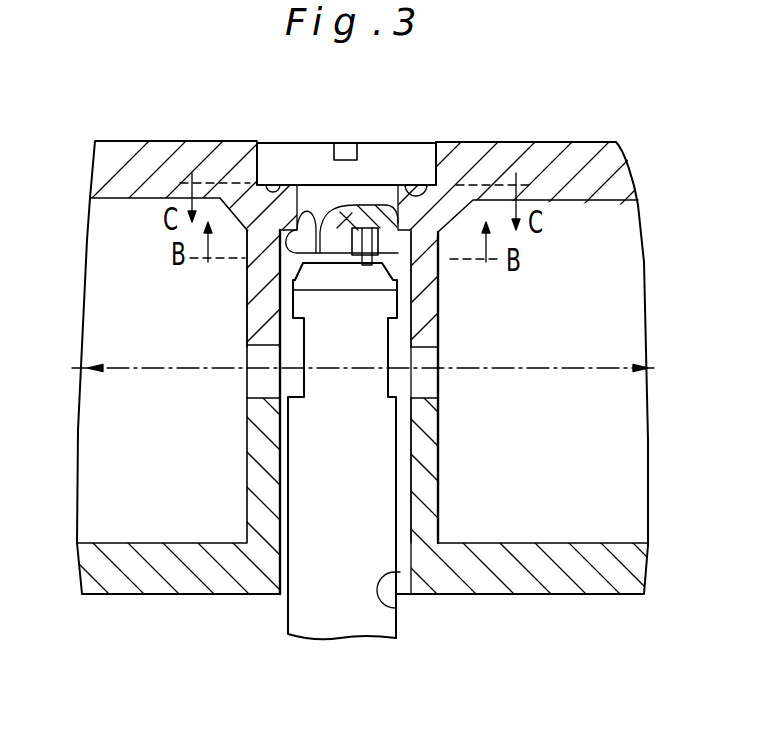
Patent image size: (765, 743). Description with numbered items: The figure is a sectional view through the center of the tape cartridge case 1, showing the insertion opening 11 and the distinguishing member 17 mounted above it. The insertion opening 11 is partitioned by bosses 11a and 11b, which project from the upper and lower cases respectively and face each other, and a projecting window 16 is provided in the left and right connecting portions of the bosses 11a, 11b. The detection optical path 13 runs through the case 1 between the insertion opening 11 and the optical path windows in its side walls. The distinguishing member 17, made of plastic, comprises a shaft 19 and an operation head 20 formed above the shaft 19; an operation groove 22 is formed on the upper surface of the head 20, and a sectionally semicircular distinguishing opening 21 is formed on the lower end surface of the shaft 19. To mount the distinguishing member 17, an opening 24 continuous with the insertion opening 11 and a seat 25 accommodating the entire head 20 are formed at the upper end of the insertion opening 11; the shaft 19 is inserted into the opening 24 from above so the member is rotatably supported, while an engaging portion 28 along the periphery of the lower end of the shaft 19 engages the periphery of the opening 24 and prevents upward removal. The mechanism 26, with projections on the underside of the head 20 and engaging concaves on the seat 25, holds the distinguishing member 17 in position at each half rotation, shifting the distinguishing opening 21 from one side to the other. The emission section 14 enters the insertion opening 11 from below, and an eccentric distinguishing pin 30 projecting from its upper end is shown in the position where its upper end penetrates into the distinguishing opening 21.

The case 1 is at (90, 594).
The insertion opening 11 is at (395, 616).
The boss 11a is at (431, 333).
The boss 11b is at (433, 497).
The detection optical path 13 is at (605, 370).
The emission section 14 is at (342, 451).
The projecting window 16 is at (431, 382).
The distinguishing member 17 is at (401, 141).
The shaft 19 is at (376, 197).
The operation head 20 is at (285, 155).
The distinguishing opening 21 is at (360, 266).
The operation groove 22 is at (343, 150).
The opening 24 is at (322, 207).
The seat 25 is at (258, 168).
The mechanism 26 is at (433, 203).
The engaging portion 28 is at (249, 284).
The distinguishing pin 30 is at (375, 260).